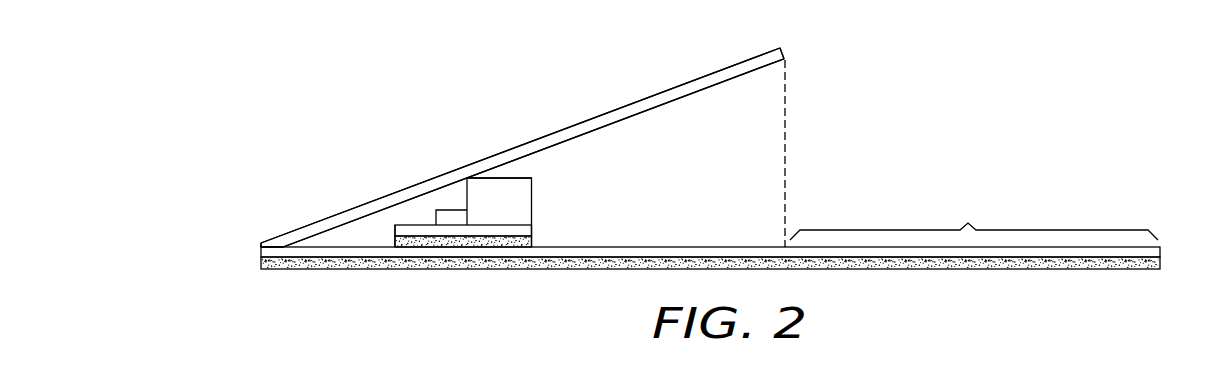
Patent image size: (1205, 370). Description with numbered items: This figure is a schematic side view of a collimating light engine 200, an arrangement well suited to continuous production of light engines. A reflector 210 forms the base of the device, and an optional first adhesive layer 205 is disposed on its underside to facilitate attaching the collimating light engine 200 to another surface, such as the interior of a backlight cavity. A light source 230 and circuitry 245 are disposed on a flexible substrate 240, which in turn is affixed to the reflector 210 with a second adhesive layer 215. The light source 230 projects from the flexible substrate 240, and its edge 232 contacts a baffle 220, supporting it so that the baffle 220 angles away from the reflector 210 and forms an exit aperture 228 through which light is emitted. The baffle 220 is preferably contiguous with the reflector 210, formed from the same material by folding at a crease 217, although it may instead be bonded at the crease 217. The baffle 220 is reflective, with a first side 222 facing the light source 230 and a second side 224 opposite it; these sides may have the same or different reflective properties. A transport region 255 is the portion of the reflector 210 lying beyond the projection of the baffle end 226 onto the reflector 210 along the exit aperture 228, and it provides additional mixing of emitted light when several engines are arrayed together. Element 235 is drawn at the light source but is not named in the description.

The collimating light engine 200 is at (313, 65).
The first adhesive layer 205 is at (274, 270).
The reflector 210 is at (319, 252).
The second adhesive layer 215 is at (407, 240).
The crease 217 is at (277, 246).
The baffle 220 is at (428, 188).
The first side 222 is at (630, 117).
The second side 224 is at (657, 94).
The baffle end 226 is at (783, 53).
The exit aperture 228 is at (787, 108).
The light source 230 is at (513, 213).
The edge 232 is at (467, 177).
The block 235 is at (532, 198).
The flexible substrate 240 is at (402, 225).
The circuitry 245 is at (457, 216).
The transport region 255 is at (974, 220).